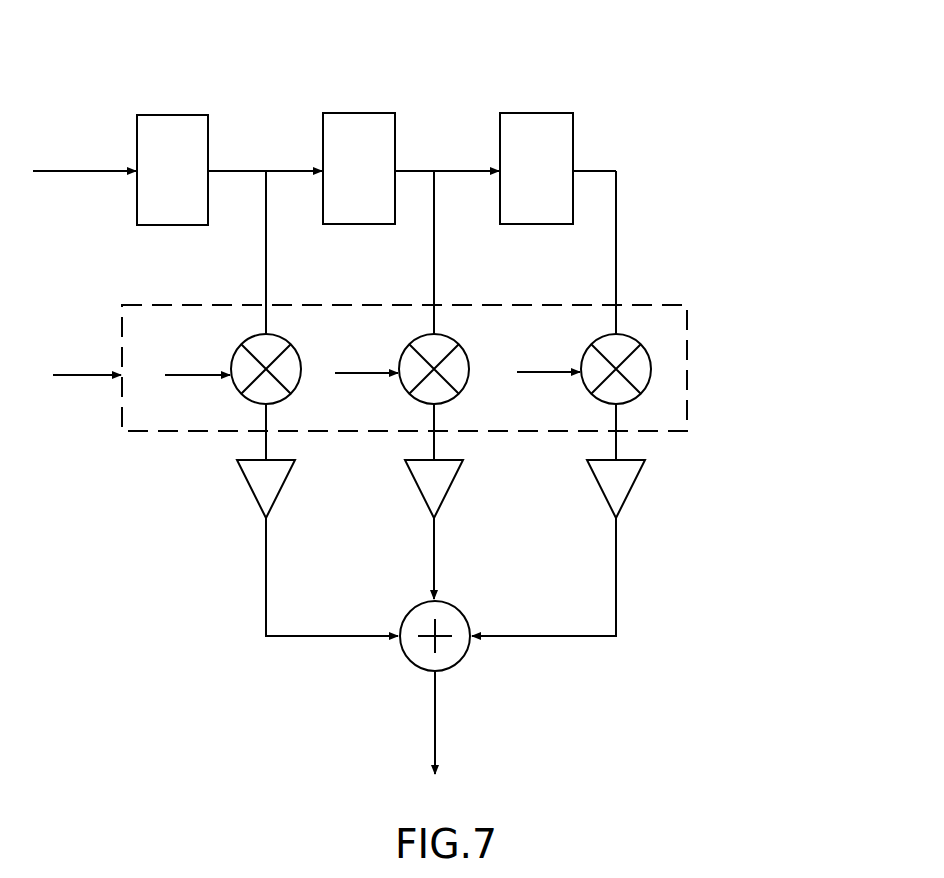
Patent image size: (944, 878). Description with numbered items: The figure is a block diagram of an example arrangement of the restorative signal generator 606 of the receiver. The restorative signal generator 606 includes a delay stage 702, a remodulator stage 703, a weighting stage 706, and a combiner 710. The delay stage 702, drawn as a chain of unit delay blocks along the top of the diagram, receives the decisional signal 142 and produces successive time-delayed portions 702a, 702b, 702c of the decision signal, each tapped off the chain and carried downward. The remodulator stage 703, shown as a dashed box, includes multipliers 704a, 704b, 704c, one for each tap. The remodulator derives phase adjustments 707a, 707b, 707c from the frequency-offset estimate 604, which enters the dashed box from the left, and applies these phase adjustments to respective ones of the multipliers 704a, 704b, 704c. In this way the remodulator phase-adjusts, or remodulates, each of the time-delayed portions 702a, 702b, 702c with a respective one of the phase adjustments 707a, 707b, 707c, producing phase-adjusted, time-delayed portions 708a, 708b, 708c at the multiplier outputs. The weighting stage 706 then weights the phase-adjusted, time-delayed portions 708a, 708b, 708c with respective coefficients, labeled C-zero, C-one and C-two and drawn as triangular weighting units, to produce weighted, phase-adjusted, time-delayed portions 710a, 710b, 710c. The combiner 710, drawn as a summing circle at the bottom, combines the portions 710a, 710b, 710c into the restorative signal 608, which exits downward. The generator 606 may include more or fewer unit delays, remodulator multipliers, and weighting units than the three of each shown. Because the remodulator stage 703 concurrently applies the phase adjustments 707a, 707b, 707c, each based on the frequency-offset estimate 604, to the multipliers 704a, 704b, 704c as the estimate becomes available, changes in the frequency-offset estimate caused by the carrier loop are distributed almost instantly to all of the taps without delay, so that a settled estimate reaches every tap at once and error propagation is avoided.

The decisional signal 142 is at (78, 170).
The frequency-offset estimate 604 is at (73, 378).
The restorative signal generator 606 is at (580, 55).
The restorative signal 608 is at (437, 707).
The delay stage 702 is at (666, 165).
The time-delayed portion 702a is at (243, 170).
The time-delayed portion 702b is at (434, 170).
The time-delayed portion 702c is at (616, 166).
The remodulator stage 703 is at (688, 355).
The multiplier 704a is at (288, 342).
The multiplier 704b is at (458, 342).
The multiplier 704c is at (640, 342).
The weighting stage 706 is at (696, 513).
The phase adjustment 707a is at (190, 378).
The phase adjustment 707b is at (356, 376).
The phase adjustment 707c is at (530, 376).
The phase-adjusted, time-delayed portion 708a is at (268, 440).
The phase-adjusted, time-delayed portion 708b is at (436, 440).
The phase-adjusted, time-delayed portion 708c is at (618, 440).
The combiner 710 is at (414, 660).
The weighted, phase-adjusted, time-delayed portion 710a is at (266, 571).
The weighted, phase-adjusted, time-delayed portion 710b is at (434, 541).
The weighted, phase-adjusted, time-delayed portion 710c is at (618, 581).